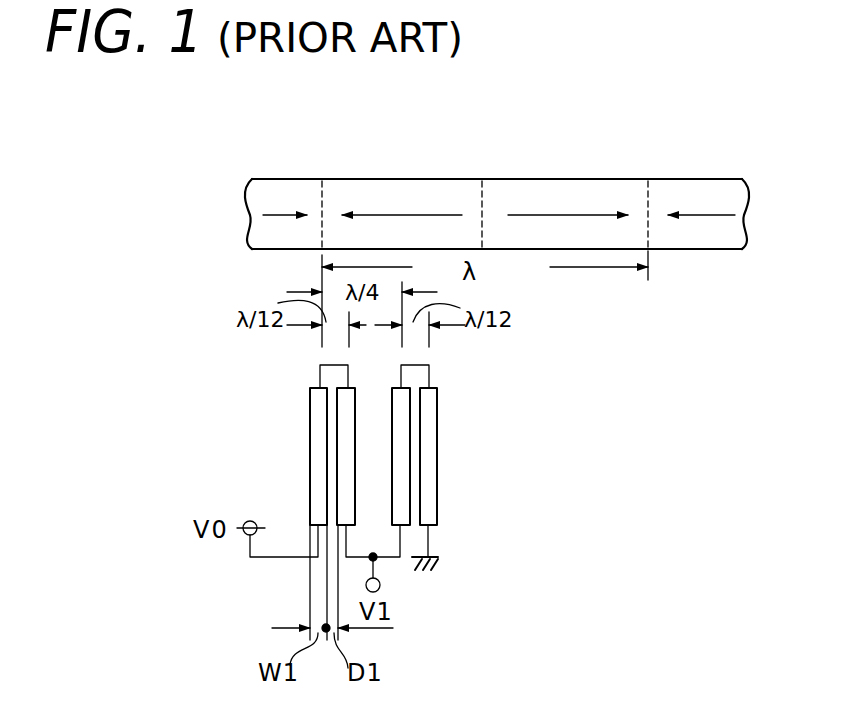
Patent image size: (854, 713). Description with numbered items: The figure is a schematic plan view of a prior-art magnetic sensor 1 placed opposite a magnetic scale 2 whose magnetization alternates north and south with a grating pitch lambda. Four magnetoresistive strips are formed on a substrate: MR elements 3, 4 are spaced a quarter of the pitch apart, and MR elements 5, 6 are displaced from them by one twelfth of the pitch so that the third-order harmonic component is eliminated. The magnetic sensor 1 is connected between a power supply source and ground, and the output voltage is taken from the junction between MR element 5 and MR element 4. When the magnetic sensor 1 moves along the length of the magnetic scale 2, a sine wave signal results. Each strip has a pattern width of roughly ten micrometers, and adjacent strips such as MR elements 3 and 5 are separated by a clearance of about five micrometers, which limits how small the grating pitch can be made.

The magnetic sensor 1 is at (436, 447).
The magnetic scale 2 is at (590, 177).
The MR element 3 is at (318, 412).
The MR element 4 is at (398, 483).
The MR element 5 is at (345, 455).
The MR element 6 is at (524, 398).